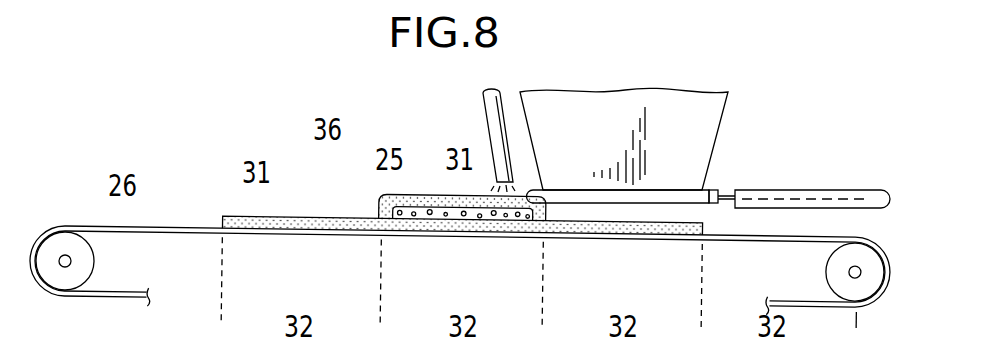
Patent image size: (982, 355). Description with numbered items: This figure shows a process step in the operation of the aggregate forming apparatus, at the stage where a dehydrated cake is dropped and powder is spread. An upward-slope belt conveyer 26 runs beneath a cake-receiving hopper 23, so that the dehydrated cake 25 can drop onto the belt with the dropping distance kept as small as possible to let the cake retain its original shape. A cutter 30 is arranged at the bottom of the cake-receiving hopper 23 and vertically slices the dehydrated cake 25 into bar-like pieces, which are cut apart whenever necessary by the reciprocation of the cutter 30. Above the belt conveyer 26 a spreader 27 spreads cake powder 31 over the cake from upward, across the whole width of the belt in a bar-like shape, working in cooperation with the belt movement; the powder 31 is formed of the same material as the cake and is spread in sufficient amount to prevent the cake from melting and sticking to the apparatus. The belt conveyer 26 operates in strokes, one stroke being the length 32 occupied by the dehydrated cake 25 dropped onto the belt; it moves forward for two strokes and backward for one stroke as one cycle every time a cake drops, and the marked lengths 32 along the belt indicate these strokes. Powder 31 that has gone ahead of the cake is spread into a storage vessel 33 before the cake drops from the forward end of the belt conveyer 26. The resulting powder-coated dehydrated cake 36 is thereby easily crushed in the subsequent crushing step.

The cake-receiving hopper 23 is at (722, 120).
The dehydrated cake 25 is at (463, 194).
The belt conveyer 26 is at (459, 257).
The spreader 27 is at (490, 118).
The cutter 30 is at (767, 190).
The powder 31 is at (462, 201).
The length 32 is at (539, 285).
The storage vessel 33 is at (822, 190).
The powder-coated dehydrated cake 36 is at (358, 185).